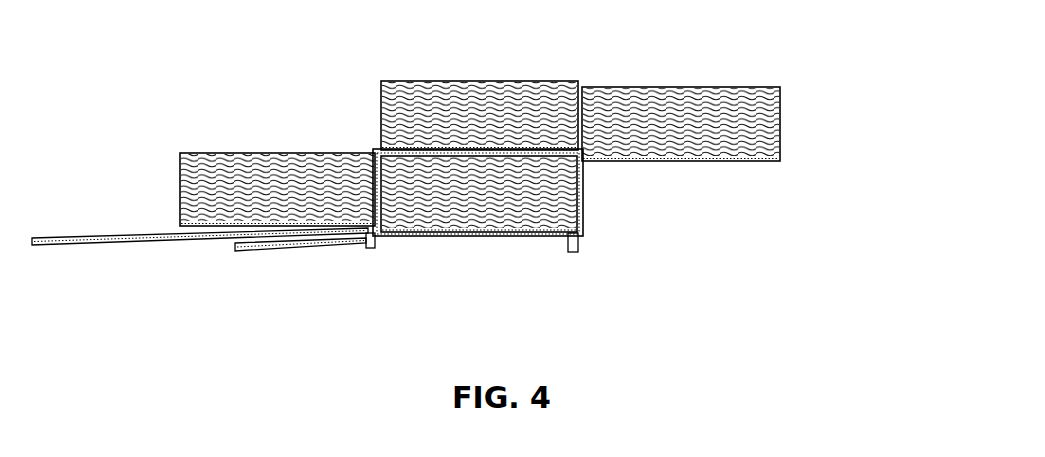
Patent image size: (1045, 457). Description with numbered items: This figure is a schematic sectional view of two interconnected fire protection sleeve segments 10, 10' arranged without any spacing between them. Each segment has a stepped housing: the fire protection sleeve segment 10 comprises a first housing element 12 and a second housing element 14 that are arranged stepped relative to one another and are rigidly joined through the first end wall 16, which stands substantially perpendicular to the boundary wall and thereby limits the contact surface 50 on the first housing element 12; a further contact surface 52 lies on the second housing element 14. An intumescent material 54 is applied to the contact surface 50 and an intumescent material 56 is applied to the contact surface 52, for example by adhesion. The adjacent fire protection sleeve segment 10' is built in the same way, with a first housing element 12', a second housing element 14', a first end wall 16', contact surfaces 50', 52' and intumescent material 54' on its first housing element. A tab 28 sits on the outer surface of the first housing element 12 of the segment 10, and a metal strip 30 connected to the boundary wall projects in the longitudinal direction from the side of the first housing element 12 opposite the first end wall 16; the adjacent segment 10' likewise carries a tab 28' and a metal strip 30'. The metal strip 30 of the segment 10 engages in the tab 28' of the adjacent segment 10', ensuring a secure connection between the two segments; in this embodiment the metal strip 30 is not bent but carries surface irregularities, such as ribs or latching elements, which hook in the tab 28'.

The fire protection sleeve segment 10 is at (824, 237).
The adjacent fire protection sleeve segment 10' is at (222, 90).
The first housing element 12 is at (479, 241).
The first housing element of the adjacent segment 12' is at (277, 167).
The second housing element 14 is at (681, 161).
The second housing element of the adjacent segment 14' is at (479, 93).
The first end wall 16 is at (514, 198).
The first end wall of the adjacent segment 16' is at (478, 286).
The tab 28 is at (590, 288).
The tab of the adjacent segment 28' is at (344, 284).
The metal strip 30 is at (300, 280).
The metal strip of the adjacent segment 30' is at (200, 272).
The contact surface 50 is at (479, 135).
The contact surface of the adjacent segment 50' is at (277, 164).
The contact surface 52 is at (681, 92).
The contact surface of the adjacent segment 52' is at (455, 113).
The intumescent material 54 is at (479, 235).
The intumescent material of the adjacent segment 54' is at (277, 244).
The intumescent material 56 is at (715, 120).